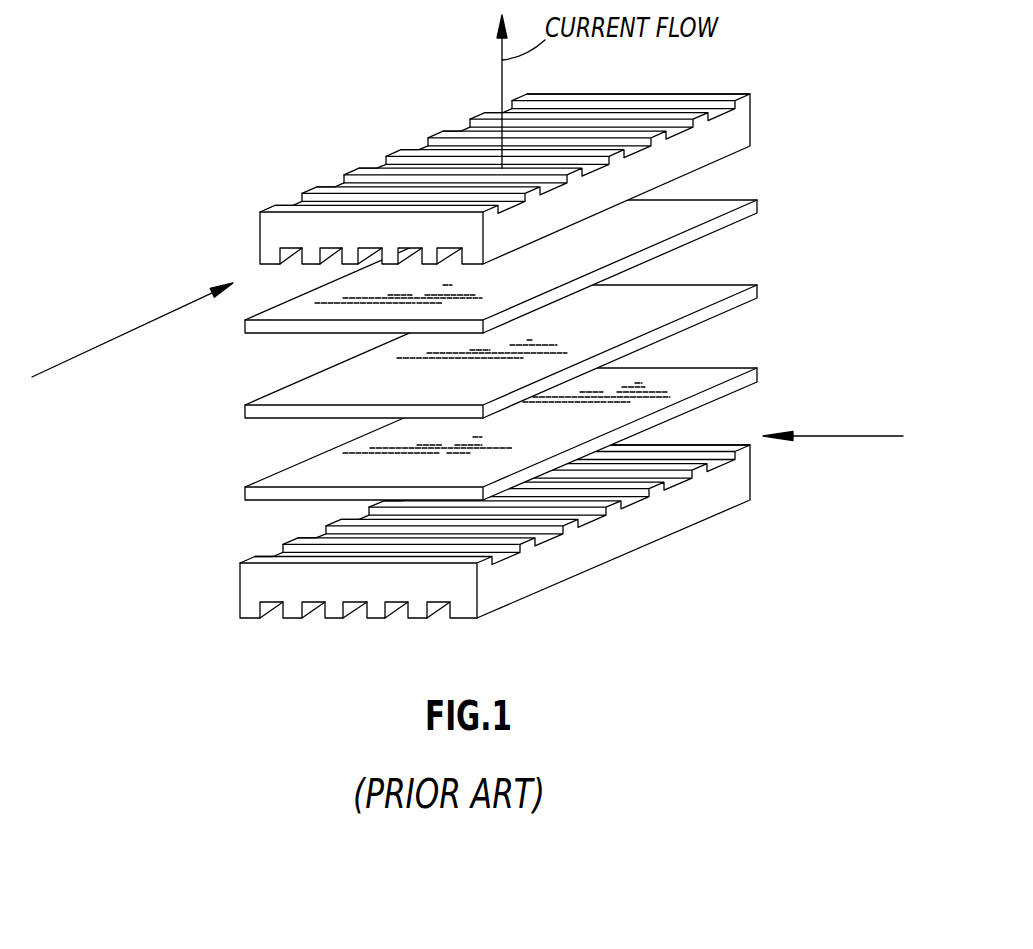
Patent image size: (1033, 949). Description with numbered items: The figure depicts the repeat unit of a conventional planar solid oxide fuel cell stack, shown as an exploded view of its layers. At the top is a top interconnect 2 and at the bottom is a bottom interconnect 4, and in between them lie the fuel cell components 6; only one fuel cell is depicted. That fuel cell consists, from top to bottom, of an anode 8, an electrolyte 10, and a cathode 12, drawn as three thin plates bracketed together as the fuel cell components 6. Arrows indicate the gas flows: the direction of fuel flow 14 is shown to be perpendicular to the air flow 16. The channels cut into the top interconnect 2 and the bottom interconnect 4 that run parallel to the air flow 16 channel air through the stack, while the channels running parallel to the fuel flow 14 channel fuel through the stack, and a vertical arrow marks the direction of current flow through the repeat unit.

The top interconnect 2 is at (720, 93).
The bottom interconnect 4 is at (740, 480).
The fuel cell components 6 is at (501, 347).
The anode 8 is at (715, 208).
The electrolyte 10 is at (713, 288).
The cathode 12 is at (710, 375).
The direction of fuel flow 14 is at (130, 330).
The air flow 16 is at (885, 436).